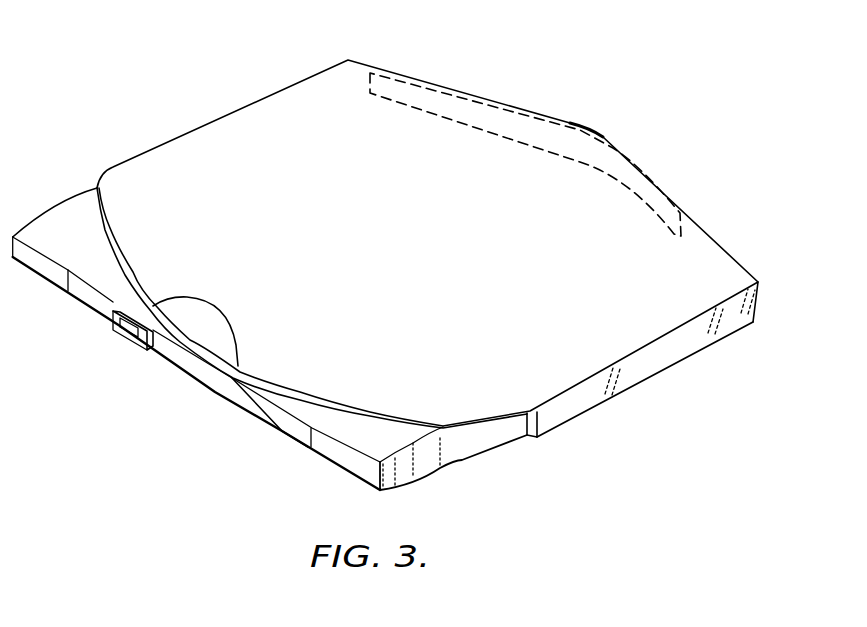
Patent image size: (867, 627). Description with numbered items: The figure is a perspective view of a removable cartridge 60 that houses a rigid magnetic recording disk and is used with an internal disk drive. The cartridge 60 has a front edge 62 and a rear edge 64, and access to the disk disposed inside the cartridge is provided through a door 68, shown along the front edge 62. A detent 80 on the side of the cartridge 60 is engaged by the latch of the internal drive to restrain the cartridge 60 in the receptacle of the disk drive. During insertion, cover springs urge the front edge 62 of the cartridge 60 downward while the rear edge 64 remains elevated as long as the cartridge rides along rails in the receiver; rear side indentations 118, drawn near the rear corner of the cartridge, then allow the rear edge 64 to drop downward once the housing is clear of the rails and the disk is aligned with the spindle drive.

The cartridge 60 is at (118, 73).
The front edge 62 is at (603, 137).
The rear edge 64 is at (282, 432).
The door 68 is at (441, 100).
The detent 80 is at (125, 333).
The rear side indentations 118 is at (527, 437).